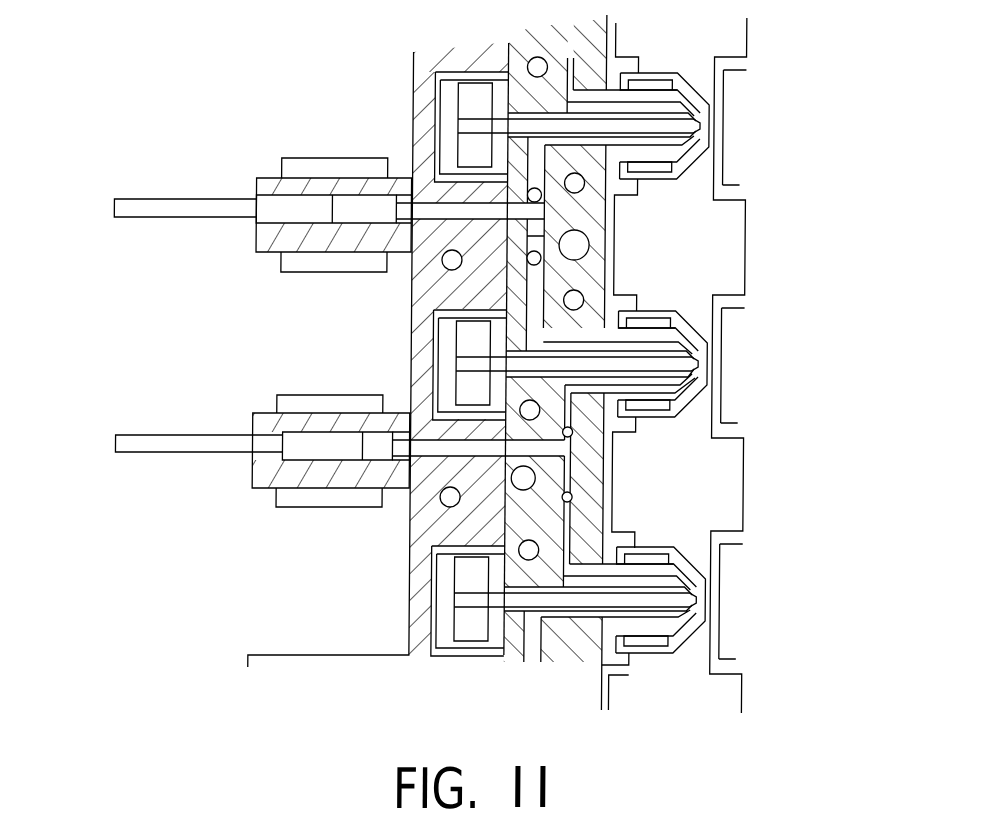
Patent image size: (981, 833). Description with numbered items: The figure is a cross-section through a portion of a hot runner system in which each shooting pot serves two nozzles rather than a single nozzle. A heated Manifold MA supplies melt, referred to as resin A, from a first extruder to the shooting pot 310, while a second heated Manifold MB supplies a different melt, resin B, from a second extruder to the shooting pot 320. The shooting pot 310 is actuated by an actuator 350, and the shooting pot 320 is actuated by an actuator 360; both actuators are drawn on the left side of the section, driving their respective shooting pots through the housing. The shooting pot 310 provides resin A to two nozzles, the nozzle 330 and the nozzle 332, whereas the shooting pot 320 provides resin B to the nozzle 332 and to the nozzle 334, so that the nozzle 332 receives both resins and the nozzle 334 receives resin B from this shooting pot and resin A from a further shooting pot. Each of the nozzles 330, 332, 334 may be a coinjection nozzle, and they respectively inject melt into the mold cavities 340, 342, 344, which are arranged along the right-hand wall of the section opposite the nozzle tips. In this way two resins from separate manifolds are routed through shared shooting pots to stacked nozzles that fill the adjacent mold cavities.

The shooting pot 310 is at (285, 212).
The shooting pot 320 is at (315, 450).
The nozzle 330 is at (697, 127).
The nozzle 332 is at (697, 365).
The nozzle 334 is at (697, 601).
The mold cavity 340 is at (737, 192).
The mold cavity 342 is at (737, 430).
The mold cavity 344 is at (737, 670).
The actuator 350 is at (145, 208).
The actuator 360 is at (150, 444).
The heated Manifold MA is at (575, 245).
The heated Manifold MB is at (526, 478).